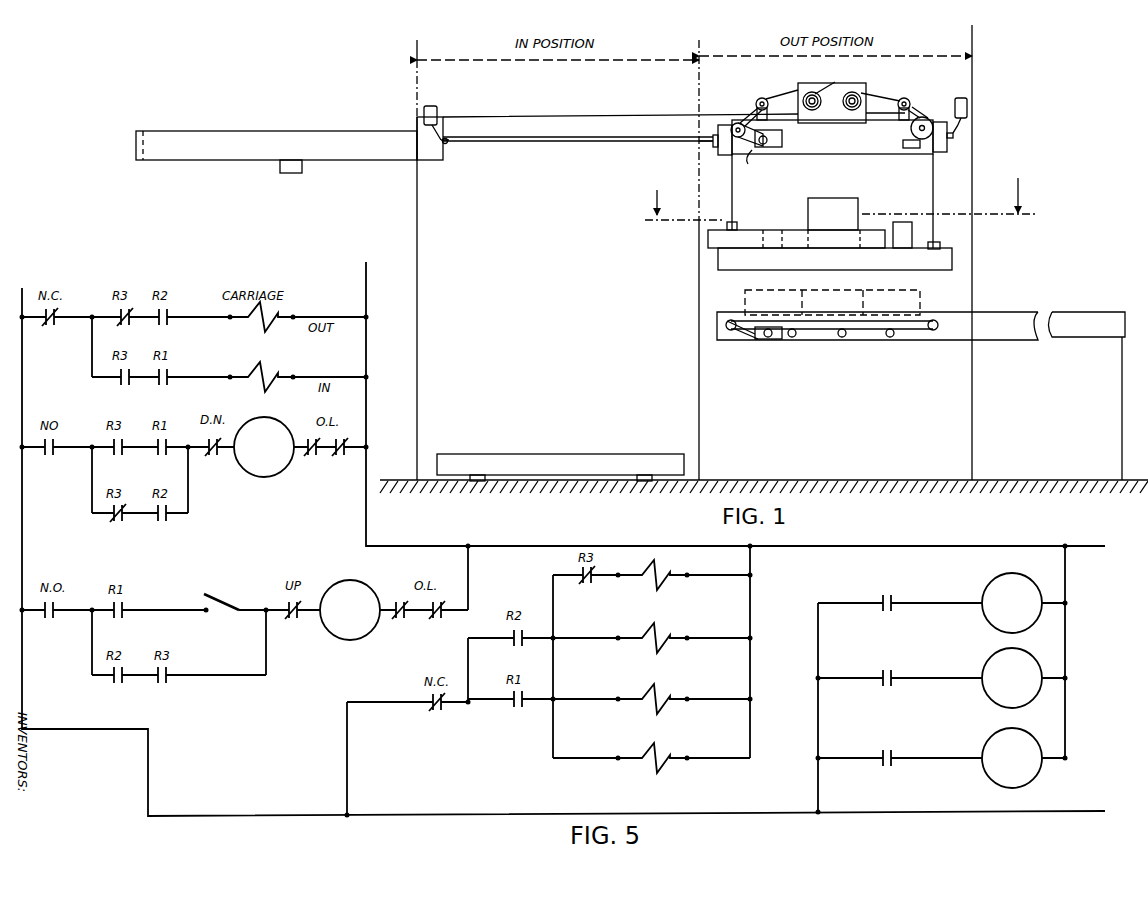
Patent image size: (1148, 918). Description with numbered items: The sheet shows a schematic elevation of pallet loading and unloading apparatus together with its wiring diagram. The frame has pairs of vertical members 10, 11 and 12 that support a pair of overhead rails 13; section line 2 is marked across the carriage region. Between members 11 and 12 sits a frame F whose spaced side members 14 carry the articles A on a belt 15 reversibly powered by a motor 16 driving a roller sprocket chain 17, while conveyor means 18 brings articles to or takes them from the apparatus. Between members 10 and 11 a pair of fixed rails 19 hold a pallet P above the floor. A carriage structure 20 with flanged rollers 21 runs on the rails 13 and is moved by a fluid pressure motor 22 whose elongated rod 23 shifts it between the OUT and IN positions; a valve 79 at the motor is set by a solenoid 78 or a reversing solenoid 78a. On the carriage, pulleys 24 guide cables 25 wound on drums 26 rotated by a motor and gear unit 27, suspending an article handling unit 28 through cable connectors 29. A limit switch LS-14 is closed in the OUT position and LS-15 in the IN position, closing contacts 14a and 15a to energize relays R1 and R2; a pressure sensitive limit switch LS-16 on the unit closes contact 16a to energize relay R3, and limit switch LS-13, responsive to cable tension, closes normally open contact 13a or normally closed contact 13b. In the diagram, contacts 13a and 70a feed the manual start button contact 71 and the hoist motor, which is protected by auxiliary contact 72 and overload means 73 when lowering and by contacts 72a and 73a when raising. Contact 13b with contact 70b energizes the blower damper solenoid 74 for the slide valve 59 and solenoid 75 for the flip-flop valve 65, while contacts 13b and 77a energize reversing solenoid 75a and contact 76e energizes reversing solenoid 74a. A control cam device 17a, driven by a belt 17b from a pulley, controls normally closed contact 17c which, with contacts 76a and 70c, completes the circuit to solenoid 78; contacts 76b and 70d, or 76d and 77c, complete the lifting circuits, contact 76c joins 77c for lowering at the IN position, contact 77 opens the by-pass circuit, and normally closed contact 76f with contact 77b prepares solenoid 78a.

In FIG. 1, the vertical members 10 is at (417, 222).
In FIG. 1, the vertical members 11 is at (699, 372).
In FIG. 1, the vertical members 12 is at (972, 394).
In FIG. 1, the overhead rails 13 is at (580, 117).
In FIG. 1, the side members 14 is at (840, 345).
In FIG. 1, the belt 15 is at (840, 315).
In FIG. 1, the motor 16 is at (776, 344).
In FIG. 1, the roller sprocket chain 17 is at (740, 345).
In FIG. 1, the control cam device 17a is at (784, 139).
In FIG. 1, the belt 17b is at (762, 163).
In FIG. 5, the belt 17b is at (48, 459).
In FIG. 5, the normally closed contact 17c is at (49, 328).
In FIG. 1, the conveyor means 18 is at (1078, 312).
In FIG. 1, the fixed rails 19 is at (478, 482).
In FIG. 1, the carriage structure 20 is at (842, 156).
In FIG. 1, the flanged rollers 21 is at (763, 98).
In FIG. 1, the fluid pressure motor 22 is at (238, 131).
In FIG. 1, the elongated rod 23 is at (518, 145).
In FIG. 1, the pulleys 24 is at (738, 122).
In FIG. 1, the cables 25 is at (732, 176).
In FIG. 1, the drums 26 is at (852, 92).
In FIG. 1, the motor and gear unit 27 is at (812, 92).
In FIG. 5, the motor and gear unit 27 is at (266, 478).
In FIG. 1, the article handling unit 28 is at (790, 222).
In FIG. 1, the cable connectors 29 is at (735, 222).
In FIG. 1, the section line 2- 2 is at (837, 194).
In FIG. 1, the valve 79 is at (292, 173).
In FIG. 1, the limit switch LS-13 is at (903, 143).
In FIG. 1, the limit switch LS-14 is at (967, 104).
In FIG. 1, the limit switch LS-15 is at (437, 110).
In FIG. 1, the limit switch LS-16 is at (902, 222).
In FIG. 1, the articles A is at (830, 290).
In FIG. 1, the frame F is at (900, 346).
In FIG. 1, the pallet P is at (472, 456).
In FIG. 5, the normally open contact 13a is at (49, 622).
In FIG. 5, the normally closed contact 13b is at (437, 714).
In FIG. 5, the normally open contact 14a is at (887, 614).
In FIG. 5, the normally open contact 15a is at (887, 690).
In FIG. 5, the normally open contact 16a is at (889, 770).
In FIG. 5, the contact 70a is at (117, 620).
In FIG. 5, the contact 70b is at (517, 711).
In FIG. 5, the normally open contact 70c is at (163, 388).
In FIG. 5, the contact 70d is at (163, 458).
In FIG. 5, the start button contact 71 is at (213, 592).
In FIG. 5, the auxiliary contact 72 is at (293, 622).
In FIG. 5, the auxiliary contact 72a is at (213, 458).
In FIG. 5, the overload means 73 is at (417, 622).
In FIG. 5, the auxiliary contact 73a is at (326, 457).
In FIG. 5, the blower damper solenoid 74 is at (652, 701).
In FIG. 5, the reversing solenoid 74a is at (652, 577).
In FIG. 5, the solenoid 75 is at (650, 761).
In FIG. 5, the reversing solenoid 75a is at (652, 640).
In FIG. 5, the normally open contact 76a is at (121, 388).
In FIG. 5, the normally closed contact 76b is at (117, 458).
In FIG. 5, the contact 76c is at (165, 687).
In FIG. 5, the contact 76d is at (117, 524).
In FIG. 5, the contact 76e is at (582, 584).
In FIG. 5, the normally closed contact 76f is at (122, 328).
In FIG. 5, the contact 77 is at (115, 687).
In FIG. 5, the contact 77a is at (516, 650).
In FIG. 5, the contact 77b is at (165, 328).
In FIG. 5, the contact 77c is at (165, 524).
In FIG. 5, the solenoid 78 is at (261, 384).
In FIG. 5, the reversing solenoid 78a is at (261, 325).
In FIG. 5, the slide valve 59 is at (657, 659).
In FIG. 5, the flip-flop valve 65 is at (674, 721).
In FIG. 5, the relay R1 is at (1012, 603).
In FIG. 5, the relay R2 is at (1012, 678).
In FIG. 5, the relay R3 is at (1012, 758).